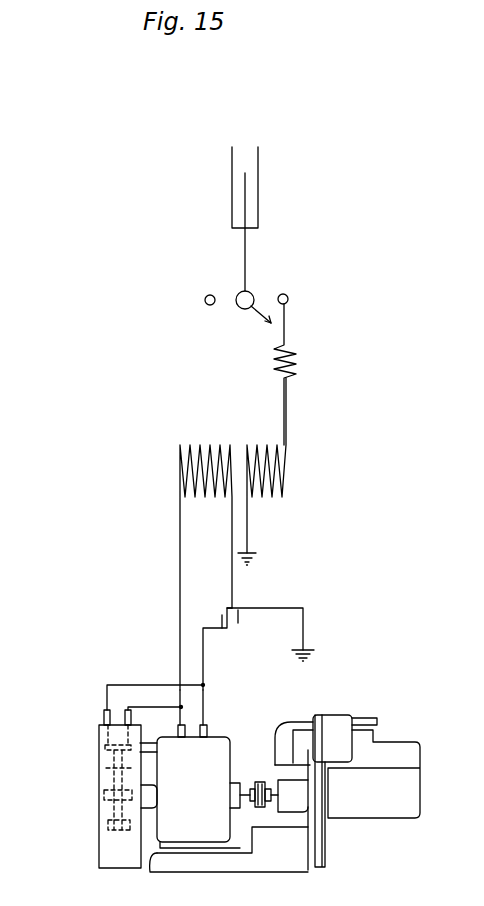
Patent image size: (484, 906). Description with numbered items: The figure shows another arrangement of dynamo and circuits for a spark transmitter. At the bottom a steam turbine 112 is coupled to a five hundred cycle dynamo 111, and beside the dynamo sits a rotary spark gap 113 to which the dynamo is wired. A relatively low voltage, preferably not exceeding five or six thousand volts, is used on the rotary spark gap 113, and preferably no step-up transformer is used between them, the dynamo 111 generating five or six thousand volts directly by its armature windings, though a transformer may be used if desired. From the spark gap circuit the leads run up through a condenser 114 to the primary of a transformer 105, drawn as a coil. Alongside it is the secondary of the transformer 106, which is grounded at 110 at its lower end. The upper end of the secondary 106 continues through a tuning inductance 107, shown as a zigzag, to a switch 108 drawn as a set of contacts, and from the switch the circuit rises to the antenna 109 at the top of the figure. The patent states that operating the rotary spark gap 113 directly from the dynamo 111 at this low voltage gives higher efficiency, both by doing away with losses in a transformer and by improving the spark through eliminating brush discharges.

The primary of a transformer 105 is at (202, 445).
The secondary of the transformer 106 is at (267, 444).
The tuning inductance 107 is at (296, 364).
The switch 108 is at (262, 318).
The antenna 109 is at (259, 198).
The ground 110 is at (251, 554).
The 500 cycle dynamo 111 is at (218, 737).
The steam turbine 112 is at (342, 716).
The rotary spark gap 113 is at (99, 768).
The condenser 114 is at (237, 607).